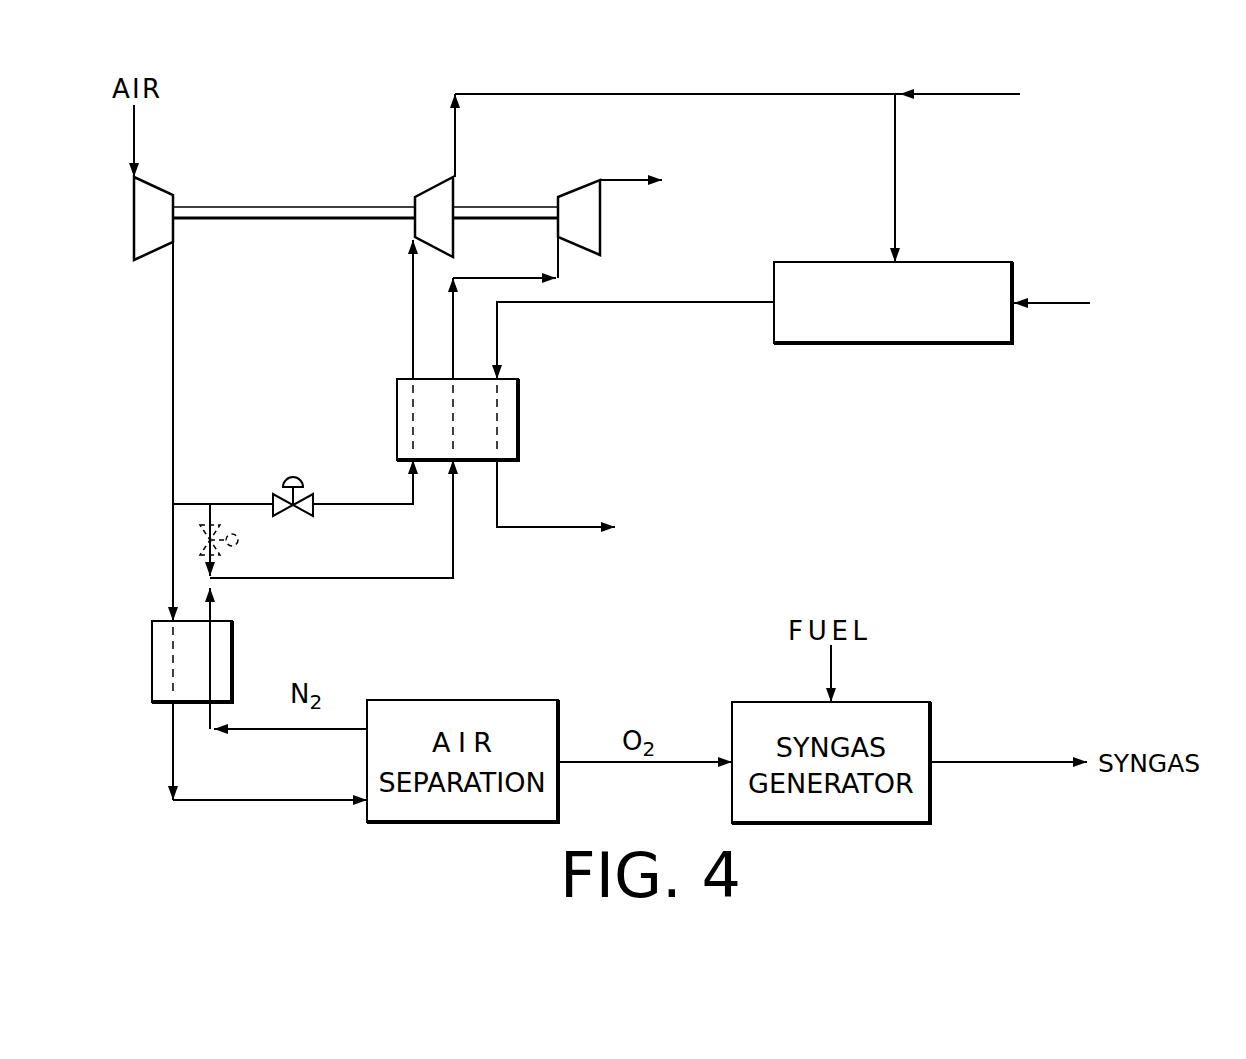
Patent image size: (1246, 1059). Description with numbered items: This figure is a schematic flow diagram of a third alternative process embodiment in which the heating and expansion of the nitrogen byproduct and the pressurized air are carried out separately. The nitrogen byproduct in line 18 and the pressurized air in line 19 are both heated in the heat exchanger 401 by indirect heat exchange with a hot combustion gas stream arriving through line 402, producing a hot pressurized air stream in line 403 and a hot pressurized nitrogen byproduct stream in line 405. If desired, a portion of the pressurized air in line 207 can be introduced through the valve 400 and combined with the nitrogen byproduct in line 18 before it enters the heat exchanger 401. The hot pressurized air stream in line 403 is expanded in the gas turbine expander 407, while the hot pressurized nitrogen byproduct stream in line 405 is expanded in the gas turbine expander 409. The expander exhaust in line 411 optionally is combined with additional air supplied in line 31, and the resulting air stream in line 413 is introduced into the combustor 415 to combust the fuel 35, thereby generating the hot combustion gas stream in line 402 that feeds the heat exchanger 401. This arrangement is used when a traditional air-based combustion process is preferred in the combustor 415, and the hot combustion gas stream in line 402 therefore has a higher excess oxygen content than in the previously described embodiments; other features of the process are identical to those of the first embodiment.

The gas turbine expander 407 is at (419, 193).
The gas turbine expander 409 is at (602, 210).
The expander exhaust line 411 is at (650, 96).
The air line 31 is at (940, 96).
The air stream line 413 is at (897, 212).
The combustor 415 is at (885, 345).
The fuel 35 is at (1058, 300).
The hot pressurized nitrogen byproduct stream line 405 is at (560, 266).
The hot combustion gas stream line 402 is at (585, 304).
The heat exchanger 401 is at (520, 415).
The hot pressurized air stream line 403 is at (410, 341).
The pressurized air line 207 is at (193, 504).
The pressurized air line 19 is at (357, 500).
The valve 400 is at (240, 548).
The nitrogen byproduct line 18 is at (215, 607).